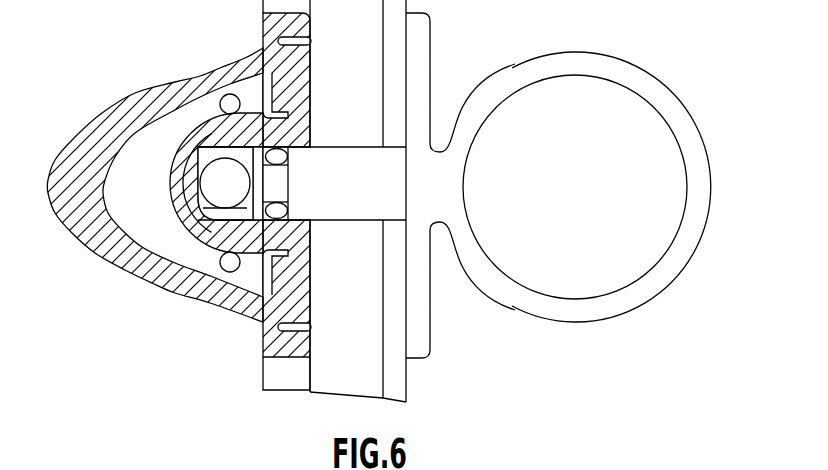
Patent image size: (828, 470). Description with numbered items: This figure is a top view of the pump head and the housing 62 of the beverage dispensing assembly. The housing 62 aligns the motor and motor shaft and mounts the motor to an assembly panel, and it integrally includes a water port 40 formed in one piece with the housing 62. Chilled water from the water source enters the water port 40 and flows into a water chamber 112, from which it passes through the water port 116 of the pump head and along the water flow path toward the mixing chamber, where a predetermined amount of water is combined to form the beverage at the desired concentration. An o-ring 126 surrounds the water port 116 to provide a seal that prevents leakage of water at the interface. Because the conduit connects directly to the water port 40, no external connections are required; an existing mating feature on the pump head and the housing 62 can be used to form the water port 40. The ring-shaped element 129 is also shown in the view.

The water port 40 is at (212, 182).
The housing 62 is at (163, 289).
The water chamber 112 is at (230, 213).
The o-ring 126 is at (290, 160).
The water port 116 is at (355, 203).
The ring 129 is at (630, 89).